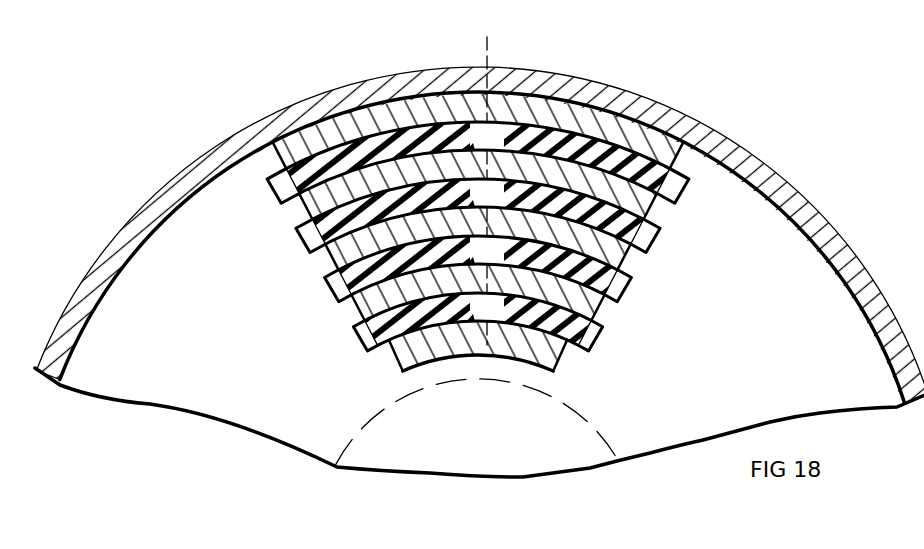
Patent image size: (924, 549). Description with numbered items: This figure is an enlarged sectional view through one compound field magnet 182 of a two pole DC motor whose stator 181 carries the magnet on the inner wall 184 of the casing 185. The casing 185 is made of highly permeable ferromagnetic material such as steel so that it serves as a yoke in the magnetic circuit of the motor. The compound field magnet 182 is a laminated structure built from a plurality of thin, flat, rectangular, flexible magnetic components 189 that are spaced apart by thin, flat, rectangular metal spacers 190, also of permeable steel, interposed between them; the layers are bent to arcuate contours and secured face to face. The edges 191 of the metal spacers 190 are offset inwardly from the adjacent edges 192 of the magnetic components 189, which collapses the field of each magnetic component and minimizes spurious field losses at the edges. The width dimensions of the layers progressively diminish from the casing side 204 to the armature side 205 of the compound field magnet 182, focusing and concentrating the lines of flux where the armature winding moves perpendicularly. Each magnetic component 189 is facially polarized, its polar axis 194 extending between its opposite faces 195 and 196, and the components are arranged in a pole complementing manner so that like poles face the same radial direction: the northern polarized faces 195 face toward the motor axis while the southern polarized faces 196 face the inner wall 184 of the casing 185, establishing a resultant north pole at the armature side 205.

The stator 181 is at (740, 147).
The compound field magnet 182 is at (563, 367).
The inner wall 184 is at (79, 333).
The casing 185 is at (205, 152).
The flexible magnetic component 189 is at (674, 198).
The metal spacer 190 is at (645, 215).
The edge of metal spacer 191 is at (324, 208).
The edge of magnetic component 192 is at (339, 243).
The polar axis 194 is at (489, 63).
The northern polarized face 195 is at (382, 351).
The southern polarized face 196 is at (610, 317).
The casing side 204 is at (506, 94).
The armature side 205 is at (474, 362).